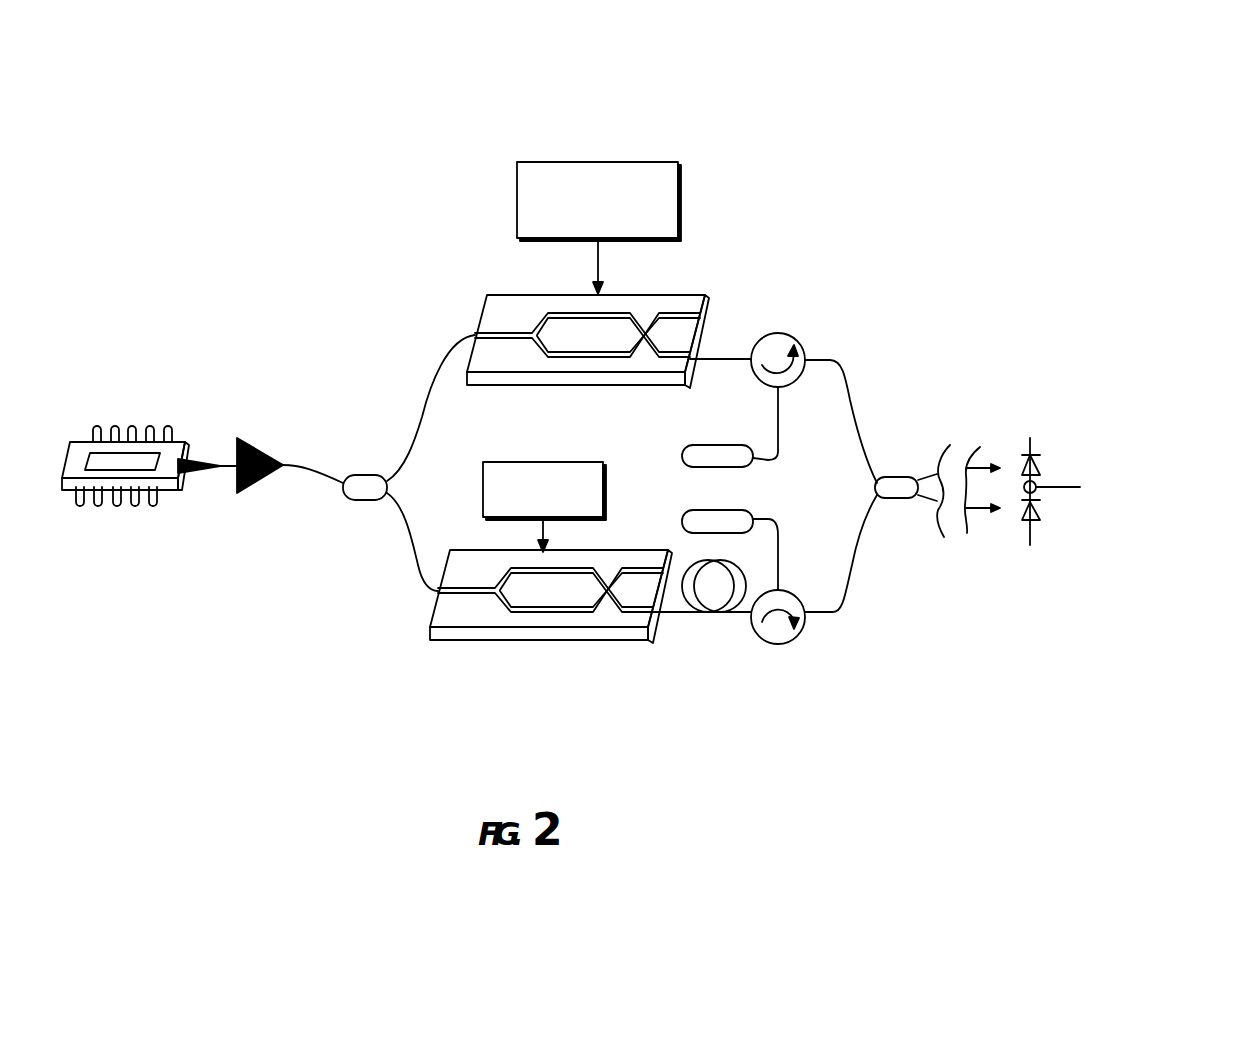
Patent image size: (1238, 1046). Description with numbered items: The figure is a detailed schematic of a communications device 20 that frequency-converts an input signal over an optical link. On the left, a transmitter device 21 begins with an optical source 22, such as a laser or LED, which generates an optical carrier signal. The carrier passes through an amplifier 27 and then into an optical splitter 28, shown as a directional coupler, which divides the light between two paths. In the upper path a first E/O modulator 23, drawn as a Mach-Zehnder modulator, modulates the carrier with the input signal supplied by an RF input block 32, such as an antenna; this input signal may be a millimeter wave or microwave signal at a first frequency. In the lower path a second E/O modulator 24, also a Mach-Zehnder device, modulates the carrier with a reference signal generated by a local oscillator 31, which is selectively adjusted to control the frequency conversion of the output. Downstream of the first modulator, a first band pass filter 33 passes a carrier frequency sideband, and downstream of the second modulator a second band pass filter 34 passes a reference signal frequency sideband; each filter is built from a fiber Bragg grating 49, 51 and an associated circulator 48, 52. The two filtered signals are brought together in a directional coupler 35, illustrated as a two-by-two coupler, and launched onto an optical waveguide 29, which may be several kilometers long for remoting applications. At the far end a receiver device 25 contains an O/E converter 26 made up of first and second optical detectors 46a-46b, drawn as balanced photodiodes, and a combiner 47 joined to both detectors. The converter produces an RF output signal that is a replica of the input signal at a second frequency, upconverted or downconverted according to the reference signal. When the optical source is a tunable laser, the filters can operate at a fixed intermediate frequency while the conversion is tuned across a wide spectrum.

The communications device 20 is at (1122, 178).
The transmitter device 21 is at (396, 292).
The optical source 22 is at (62, 488).
The first E/O modulator 23 is at (647, 294).
The second E/O modulator 24 is at (432, 642).
The receiver device 25 is at (1139, 436).
The O/E converter 26 is at (1011, 441).
The amplifier 27 is at (237, 492).
The optical splitter 28 is at (343, 487).
The optical waveguide 29 is at (982, 447).
The local oscillator 31 is at (577, 462).
The RF input block 32 is at (608, 162).
The first band pass filter 33 is at (812, 290).
The second band pass filter 34 is at (753, 659).
The directional coupler 35 is at (917, 500).
The first and second optical detectors 46a-46b is at (1022, 471).
The combiner 47 is at (1037, 483).
The circulator 48 is at (803, 345).
The fiber Bragg grating 49 is at (745, 468).
The fiber Bragg grating 51 is at (742, 510).
The circulator 52 is at (798, 636).